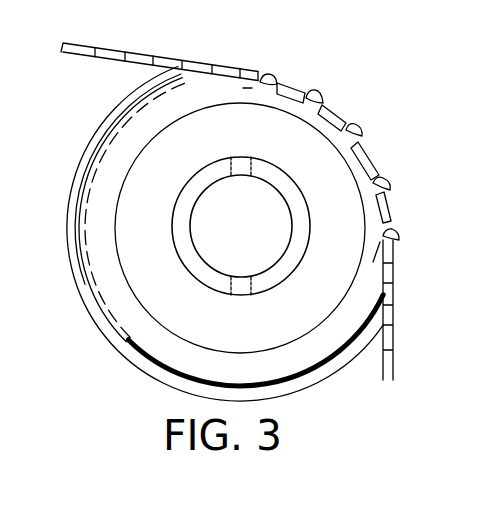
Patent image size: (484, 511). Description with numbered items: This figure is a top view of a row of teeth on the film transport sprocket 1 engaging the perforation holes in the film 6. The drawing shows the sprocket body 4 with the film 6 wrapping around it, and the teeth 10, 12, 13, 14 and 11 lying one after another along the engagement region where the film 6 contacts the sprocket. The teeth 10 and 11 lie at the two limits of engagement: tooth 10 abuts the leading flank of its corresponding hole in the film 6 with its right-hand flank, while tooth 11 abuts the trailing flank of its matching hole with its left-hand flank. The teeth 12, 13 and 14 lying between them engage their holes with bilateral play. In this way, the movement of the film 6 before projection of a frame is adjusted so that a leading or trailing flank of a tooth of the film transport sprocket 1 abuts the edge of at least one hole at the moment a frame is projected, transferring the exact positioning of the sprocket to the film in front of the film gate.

The film transport sprocket 1 is at (192, 262).
The disk 4 is at (105, 176).
The film 6 is at (150, 57).
The tooth 10 is at (269, 76).
The tooth 11 is at (393, 234).
The tooth 12 is at (320, 95).
The tooth 13 is at (357, 130).
The tooth 14 is at (383, 184).